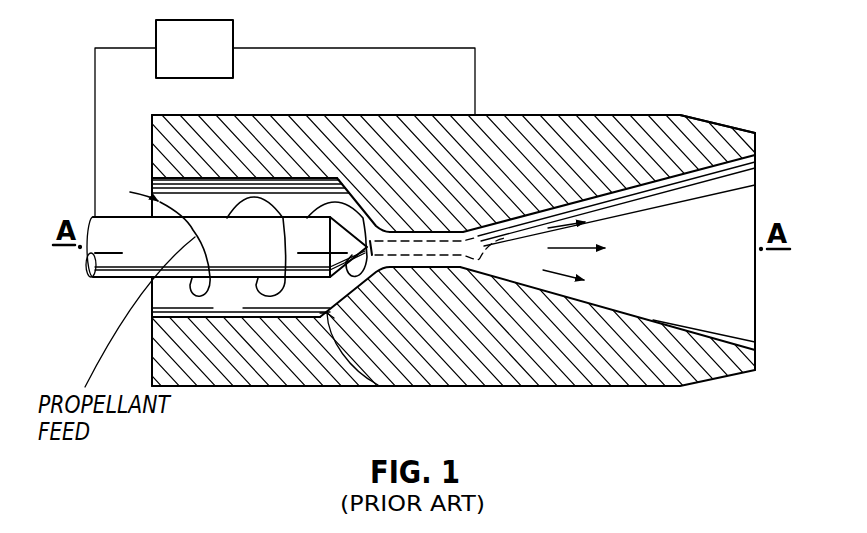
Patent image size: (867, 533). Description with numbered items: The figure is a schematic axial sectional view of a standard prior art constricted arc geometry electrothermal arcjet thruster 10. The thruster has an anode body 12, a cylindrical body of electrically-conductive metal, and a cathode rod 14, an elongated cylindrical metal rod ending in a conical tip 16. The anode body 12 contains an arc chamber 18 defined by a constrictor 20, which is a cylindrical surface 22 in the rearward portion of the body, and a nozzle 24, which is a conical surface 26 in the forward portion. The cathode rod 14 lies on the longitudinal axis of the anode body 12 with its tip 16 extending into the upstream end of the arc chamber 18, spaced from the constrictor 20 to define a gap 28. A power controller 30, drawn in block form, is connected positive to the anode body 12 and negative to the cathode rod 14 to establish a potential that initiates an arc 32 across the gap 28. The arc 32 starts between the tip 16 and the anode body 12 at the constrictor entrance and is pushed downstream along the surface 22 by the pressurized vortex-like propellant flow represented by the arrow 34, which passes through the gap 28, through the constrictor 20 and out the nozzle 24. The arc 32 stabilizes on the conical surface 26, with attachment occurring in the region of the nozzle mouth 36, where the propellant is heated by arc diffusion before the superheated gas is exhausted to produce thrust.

The arcjet thruster 10 is at (657, 53).
The anode body 12 is at (499, 111).
The cathode rod 14 is at (228, 290).
The conical tip 16 is at (265, 346).
The arc chamber 18 is at (378, 385).
The constrictor 20 is at (402, 220).
The cylindrical surface 22 is at (429, 234).
The nozzle 24 is at (650, 115).
The conical surface 26 is at (648, 190).
The gap 28 is at (373, 270).
The power controller 30 is at (222, 20).
The arc 32 is at (487, 249).
The arrow 34 is at (281, 226).
The nozzle mouth 36 is at (465, 272).